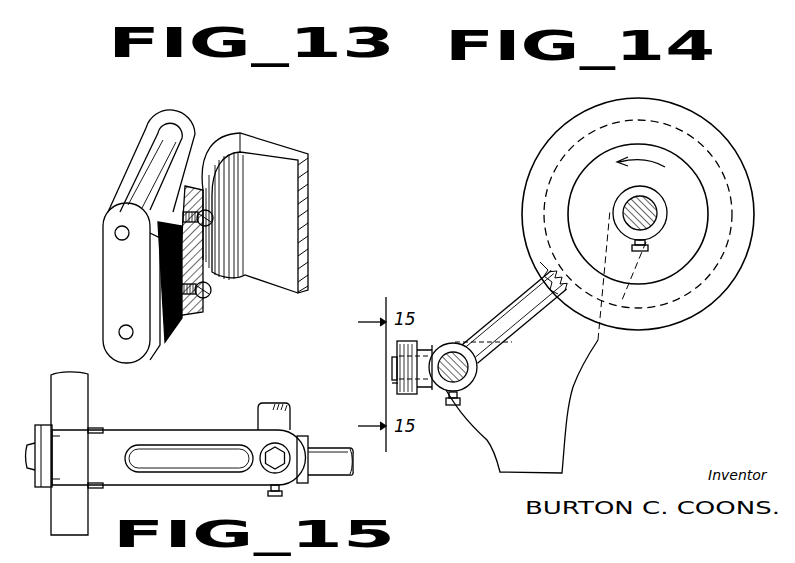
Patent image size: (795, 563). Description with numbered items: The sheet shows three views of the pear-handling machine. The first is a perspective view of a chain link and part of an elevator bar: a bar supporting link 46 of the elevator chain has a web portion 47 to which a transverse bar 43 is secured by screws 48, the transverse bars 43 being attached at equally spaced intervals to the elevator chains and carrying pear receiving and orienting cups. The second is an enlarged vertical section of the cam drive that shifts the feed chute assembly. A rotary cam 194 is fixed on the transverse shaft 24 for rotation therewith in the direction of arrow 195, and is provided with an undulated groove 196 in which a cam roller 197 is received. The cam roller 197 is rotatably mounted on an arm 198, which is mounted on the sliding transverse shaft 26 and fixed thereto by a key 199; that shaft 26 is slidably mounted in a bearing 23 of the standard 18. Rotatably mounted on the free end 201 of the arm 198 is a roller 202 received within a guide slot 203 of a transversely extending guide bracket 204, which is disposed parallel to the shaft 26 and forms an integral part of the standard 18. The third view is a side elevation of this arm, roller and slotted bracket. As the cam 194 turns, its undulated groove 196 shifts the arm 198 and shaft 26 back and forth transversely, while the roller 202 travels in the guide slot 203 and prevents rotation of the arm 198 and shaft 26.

In FIG. 13, the transverse bar 43 is at (287, 158).
In FIG. 13, the bar supporting link 46 is at (186, 136).
In FIG. 13, the web portion 47 is at (177, 303).
In FIG. 13, the screws 48 is at (213, 219).
In FIG. 14, the rotary cam 194 is at (556, 149).
In FIG. 14, the arrow 195 is at (638, 171).
In FIG. 14, the groove 196 is at (668, 305).
In FIG. 14, the cam roller 197 is at (536, 261).
In FIG. 14, the arm 198 is at (530, 296).
In FIG. 15, the arm 198 is at (284, 410).
In FIG. 14, the key 199 is at (437, 360).
In FIG. 14, the bearing 23 is at (448, 343).
In FIG. 15, the bearing 23 is at (46, 488).
In FIG. 14, the transverse shaft 24 is at (651, 209).
In FIG. 14, the transverse shaft 26 is at (461, 373).
In FIG. 15, the transverse shaft 26 is at (335, 477).
In FIG. 14, the standard 18 is at (538, 463).
In FIG. 15, the standard 18 is at (78, 402).
In FIG. 14, the free end 201 is at (436, 386).
In FIG. 15, the free end 201 is at (263, 453).
In FIG. 14, the roller 202 is at (392, 383).
In FIG. 15, the roller 202 is at (292, 438).
In FIG. 15, the guide slot 203 is at (185, 473).
In FIG. 14, the guide bracket 204 is at (398, 357).
In FIG. 15, the guide bracket 204 is at (116, 459).